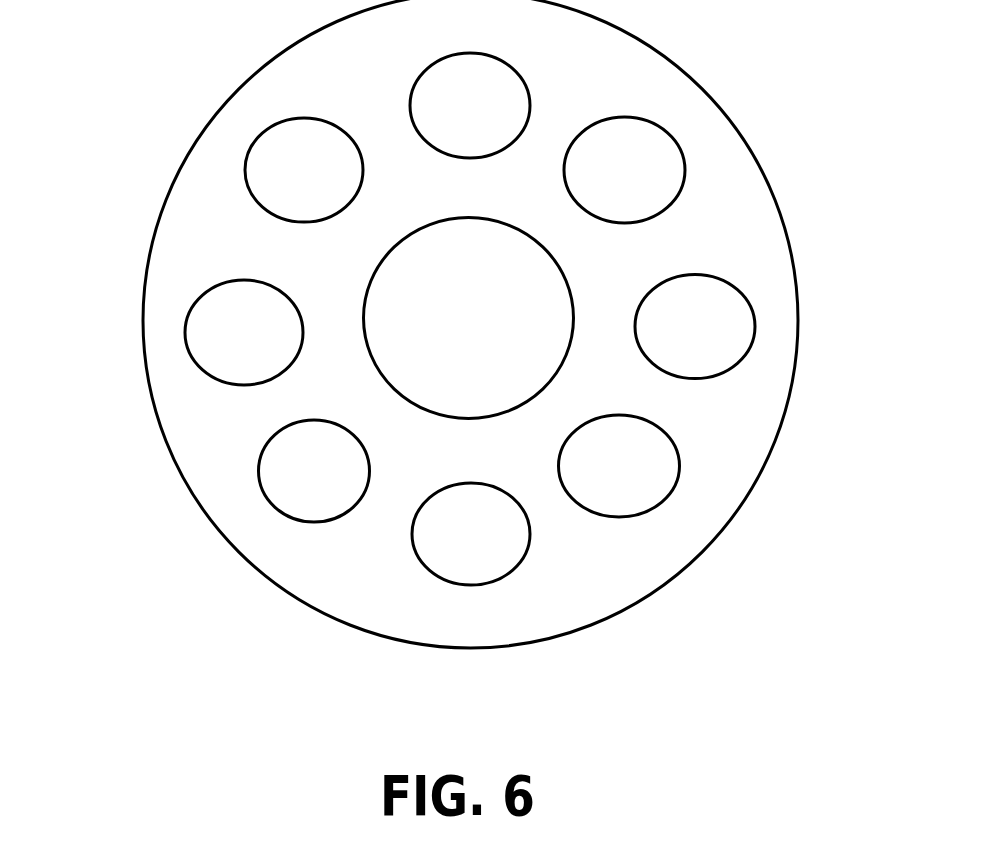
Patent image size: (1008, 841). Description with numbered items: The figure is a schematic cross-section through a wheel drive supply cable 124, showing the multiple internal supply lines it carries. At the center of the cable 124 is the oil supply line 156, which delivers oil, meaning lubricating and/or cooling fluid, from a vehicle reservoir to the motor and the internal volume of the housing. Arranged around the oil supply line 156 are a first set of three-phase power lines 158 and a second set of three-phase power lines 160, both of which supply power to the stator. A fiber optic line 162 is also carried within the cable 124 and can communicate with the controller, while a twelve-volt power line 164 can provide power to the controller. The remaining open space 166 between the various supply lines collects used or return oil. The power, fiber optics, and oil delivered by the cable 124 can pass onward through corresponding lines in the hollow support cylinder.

The cable 124 is at (176, 140).
The oil supply line 156 is at (497, 338).
The first set of 3-phase power lines 158 is at (338, 492).
The second set of 3-phase power lines 160 is at (497, 120).
The fiber optic line 162 is at (267, 344).
The 12V power line 164 is at (722, 340).
The open space 166 is at (707, 432).